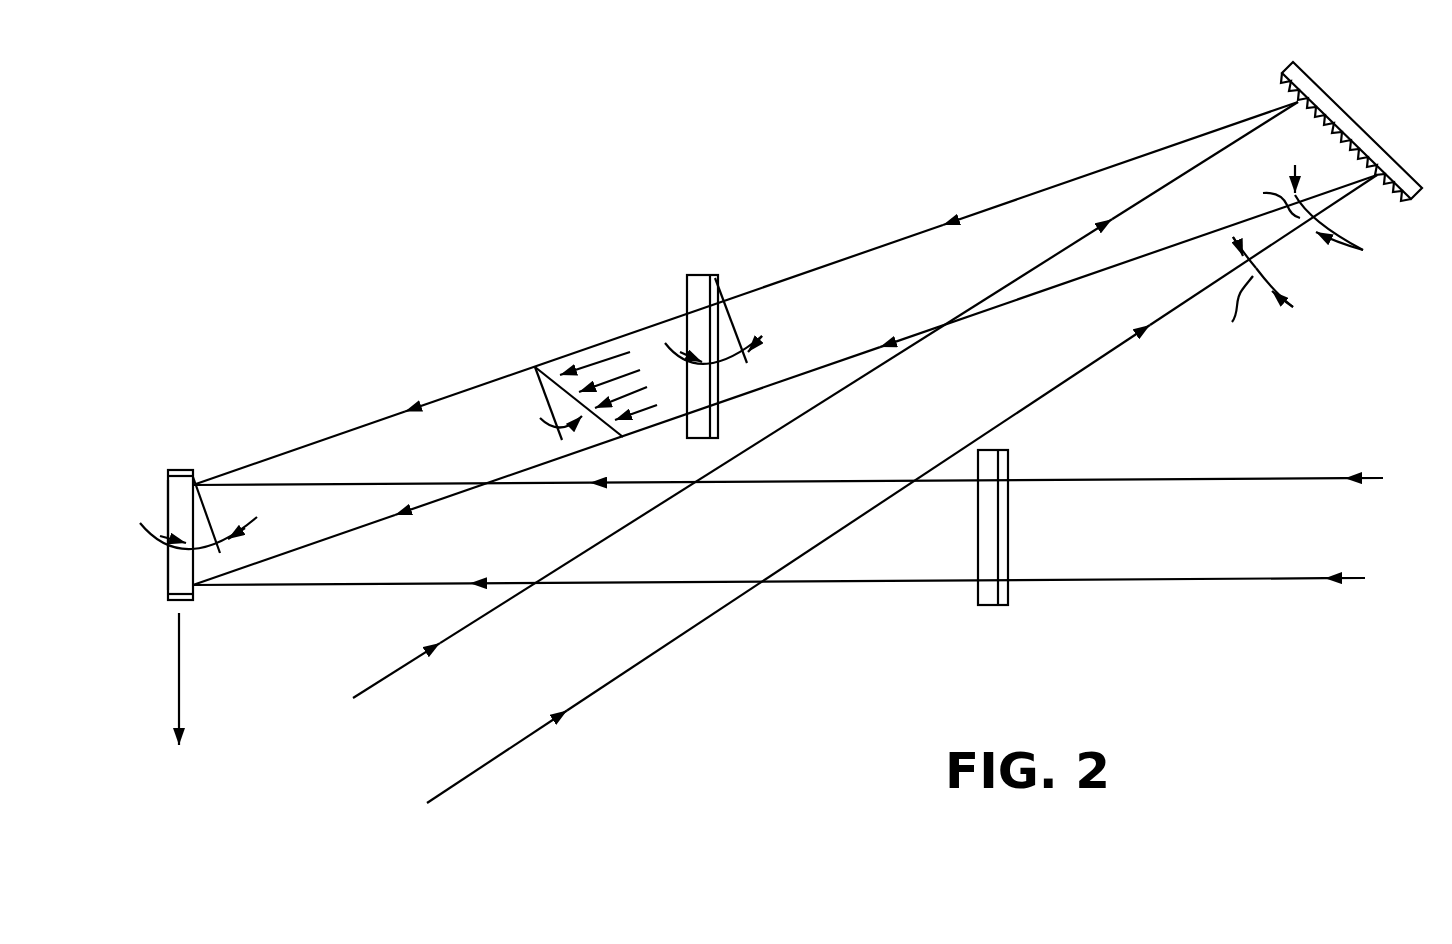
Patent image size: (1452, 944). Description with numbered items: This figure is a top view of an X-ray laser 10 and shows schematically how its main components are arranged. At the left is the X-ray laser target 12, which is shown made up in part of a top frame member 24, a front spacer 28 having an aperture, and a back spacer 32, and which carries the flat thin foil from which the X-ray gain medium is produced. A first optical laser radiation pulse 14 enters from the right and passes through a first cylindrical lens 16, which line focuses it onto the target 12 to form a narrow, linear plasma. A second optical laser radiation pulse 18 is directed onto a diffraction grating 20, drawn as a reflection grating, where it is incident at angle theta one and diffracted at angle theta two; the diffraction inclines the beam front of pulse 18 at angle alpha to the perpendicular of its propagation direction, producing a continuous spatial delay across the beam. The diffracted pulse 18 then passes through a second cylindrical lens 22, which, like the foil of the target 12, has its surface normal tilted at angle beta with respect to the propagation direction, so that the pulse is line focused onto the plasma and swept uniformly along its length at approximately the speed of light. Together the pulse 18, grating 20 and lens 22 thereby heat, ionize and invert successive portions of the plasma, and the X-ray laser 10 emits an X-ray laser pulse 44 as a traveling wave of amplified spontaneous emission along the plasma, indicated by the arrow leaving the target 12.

The X-ray laser 10 is at (695, 713).
The X-ray laser target 12 is at (167, 500).
The first optical laser radiation pulse 14 is at (947, 480).
The first cylindrical lens 16 is at (995, 605).
The second optical laser radiation pulse 18 is at (355, 529).
The diffraction grating 20 is at (1357, 116).
The second cylindrical lens 22 is at (700, 275).
The top frame member 24 is at (167, 570).
The front spacer 28 is at (190, 601).
The back spacer 32 is at (181, 470).
The X-ray laser pulse 44 is at (179, 713).